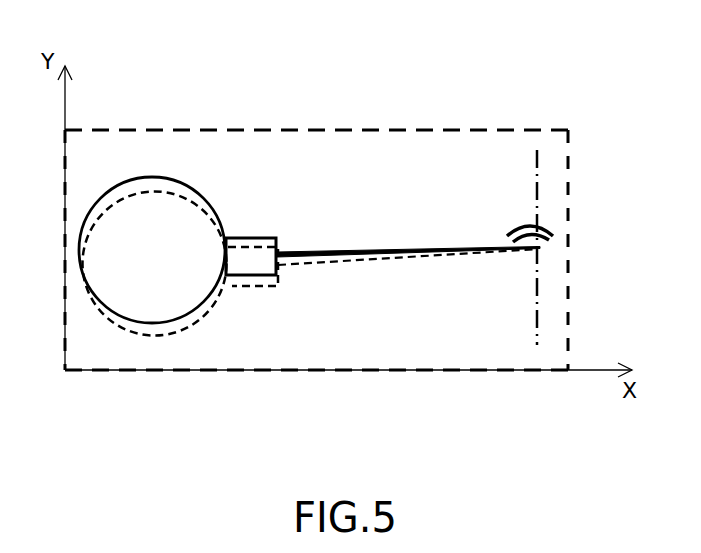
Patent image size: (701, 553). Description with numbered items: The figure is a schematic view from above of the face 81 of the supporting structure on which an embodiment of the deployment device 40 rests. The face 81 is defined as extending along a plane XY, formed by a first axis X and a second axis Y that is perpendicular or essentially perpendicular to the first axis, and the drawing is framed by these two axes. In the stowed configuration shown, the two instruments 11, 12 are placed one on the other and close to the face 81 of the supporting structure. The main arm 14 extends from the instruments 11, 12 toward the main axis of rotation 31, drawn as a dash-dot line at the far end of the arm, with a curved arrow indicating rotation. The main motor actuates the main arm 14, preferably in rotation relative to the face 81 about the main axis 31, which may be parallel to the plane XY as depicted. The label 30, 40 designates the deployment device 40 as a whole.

The instrument 11 is at (141, 310).
The instrument 12 is at (153, 327).
The main arm 14 is at (332, 255).
The assembly 30 is at (316, 230).
The deployment device 40 is at (252, 262).
The main axis of rotation 31 is at (537, 190).
The face of the supporting structure 81 is at (297, 333).